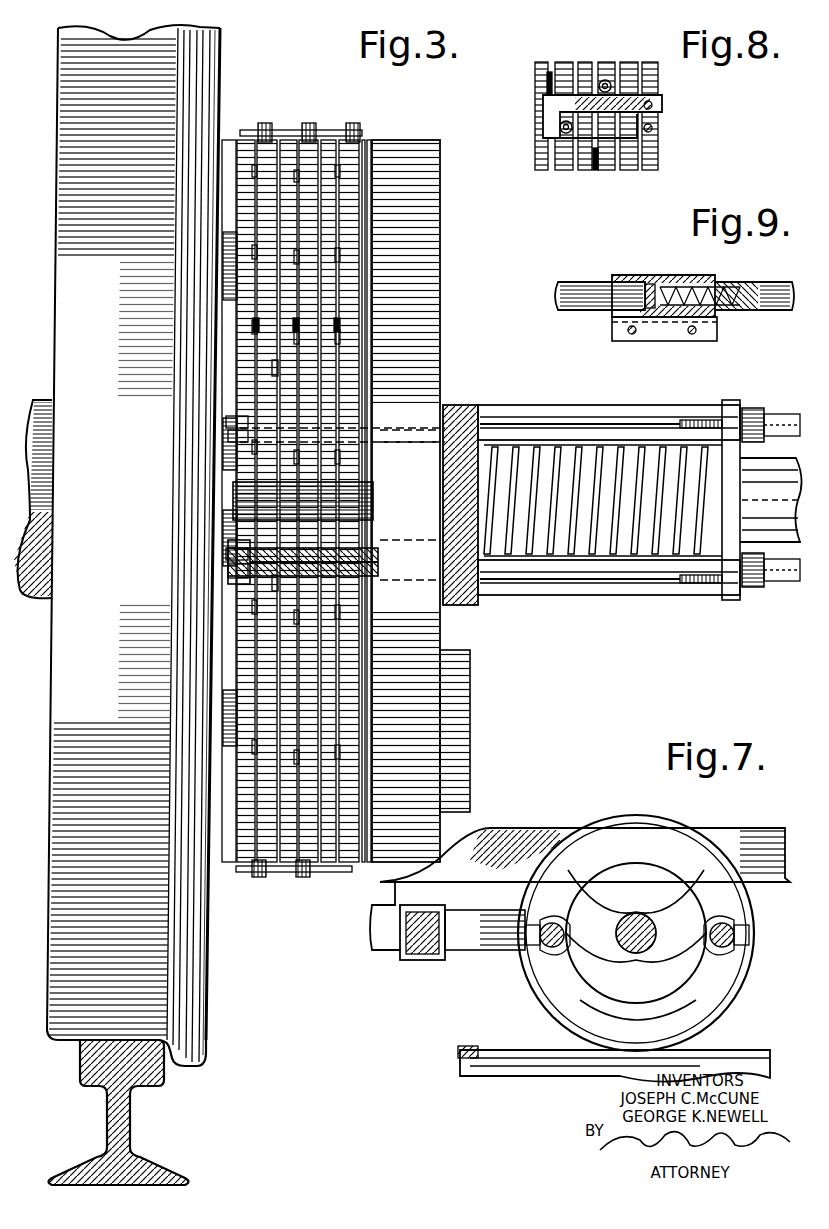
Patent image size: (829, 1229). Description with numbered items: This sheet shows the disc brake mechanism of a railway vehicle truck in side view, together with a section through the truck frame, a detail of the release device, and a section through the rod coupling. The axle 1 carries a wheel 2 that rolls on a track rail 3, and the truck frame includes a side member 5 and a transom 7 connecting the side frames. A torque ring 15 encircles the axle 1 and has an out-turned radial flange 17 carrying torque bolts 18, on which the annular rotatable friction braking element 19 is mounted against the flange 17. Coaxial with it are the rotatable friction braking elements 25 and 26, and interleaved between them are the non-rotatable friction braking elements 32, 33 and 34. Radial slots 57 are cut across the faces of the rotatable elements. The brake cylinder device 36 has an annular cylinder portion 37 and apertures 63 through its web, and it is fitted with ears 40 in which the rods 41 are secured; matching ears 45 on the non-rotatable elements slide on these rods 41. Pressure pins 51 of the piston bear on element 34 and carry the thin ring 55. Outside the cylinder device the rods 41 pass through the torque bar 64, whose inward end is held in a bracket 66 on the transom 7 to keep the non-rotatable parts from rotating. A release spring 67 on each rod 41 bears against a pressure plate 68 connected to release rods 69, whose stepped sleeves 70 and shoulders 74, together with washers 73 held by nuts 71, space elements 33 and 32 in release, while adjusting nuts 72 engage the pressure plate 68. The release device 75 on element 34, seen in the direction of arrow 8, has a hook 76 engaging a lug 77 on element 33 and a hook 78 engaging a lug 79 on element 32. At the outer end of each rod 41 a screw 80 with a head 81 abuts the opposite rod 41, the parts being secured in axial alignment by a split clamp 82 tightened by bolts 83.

In FIG. 3, the axle 1 is at (570, 416).
In FIG. 7, the axle 1 is at (636, 913).
In FIG. 3, the wheel 2 is at (192, 1050).
In FIG. 7, the wheel 2 is at (540, 1010).
In FIG. 3, the track rail 3 is at (145, 1070).
In FIG. 7, the track rail 3 is at (472, 1046).
In FIG. 7, the side member 5 is at (556, 830).
In FIG. 7, the transom 7 is at (375, 950).
In FIG. 3, the arrow 8 is at (303, 96).
In FIG. 3, the torque ring 15 is at (176, 640).
In FIG. 3, the radial flange 17 is at (232, 645).
In FIG. 3, the torque bolt 18 is at (228, 298).
In FIG. 3, the rotatable friction braking element 19 is at (243, 862).
In FIG. 8, the rotatable friction braking element 19 is at (540, 62).
In FIG. 3, the rotatable friction braking element 25 is at (290, 862).
In FIG. 8, the rotatable friction braking element 25 is at (586, 62).
In FIG. 3, the rotatable friction braking element 26 is at (328, 862).
In FIG. 8, the rotatable friction braking element 26 is at (630, 128).
In FIG. 3, the non-rotatable friction braking element 32 is at (268, 862).
In FIG. 8, the non-rotatable friction braking element 32 is at (564, 62).
In FIG. 3, the non-rotatable friction braking element 33 is at (308, 862).
In FIG. 8, the non-rotatable friction braking element 33 is at (606, 62).
In FIG. 3, the non-rotatable friction braking element 34 is at (352, 846).
In FIG. 8, the non-rotatable friction braking element 34 is at (648, 66).
In FIG. 3, the brake cylinder device 36 is at (440, 228).
In FIG. 7, the brake cylinder device 36 is at (632, 870).
In FIG. 3, the cylinder portion 37 is at (455, 740).
In FIG. 3, the ear 40 is at (476, 606).
In FIG. 3, the rod 41 is at (700, 575).
In FIG. 7, the rod 41 is at (562, 928).
In FIG. 3, the ear 45 is at (330, 430).
In FIG. 3, the pressure pin 51 is at (368, 238).
In FIG. 3, the ring 55 is at (368, 262).
In FIG. 3, the radial slot 57 is at (334, 328).
In FIG. 8, the radial slot 57 is at (548, 78).
In FIG. 3, the aperture 63 is at (445, 516).
In FIG. 3, the torque bar 64 is at (470, 786).
In FIG. 7, the bracket 66 is at (402, 962).
In FIG. 3, the release spring 67 is at (562, 560).
In FIG. 3, the pressure plate 68 is at (735, 584).
In FIG. 3, the release rod 69 is at (648, 432).
In FIG. 7, the release rod 69 is at (548, 948).
In FIG. 3, the stepped sleeve 70 is at (274, 378).
In FIG. 3, the nut 71 is at (232, 420).
In FIG. 3, the adjusting nut 72 is at (760, 412).
In FIG. 3, the washer 73 is at (232, 436).
In FIG. 3, the shoulder 74 is at (300, 600).
In FIG. 3, the release device 75 is at (255, 130).
In FIG. 8, the release device 75 is at (652, 128).
In FIG. 8, the hook 76 is at (600, 86).
In FIG. 8, the lug 77 is at (612, 96).
In FIG. 8, the hook 78 is at (560, 128).
In FIG. 8, the lug 79 is at (548, 162).
In FIG. 9, the screw 80 is at (675, 286).
In FIG. 9, the head 81 is at (648, 284).
In FIG. 9, the split clamp 82 is at (620, 276).
In FIG. 9, the bolt 83 is at (634, 336).